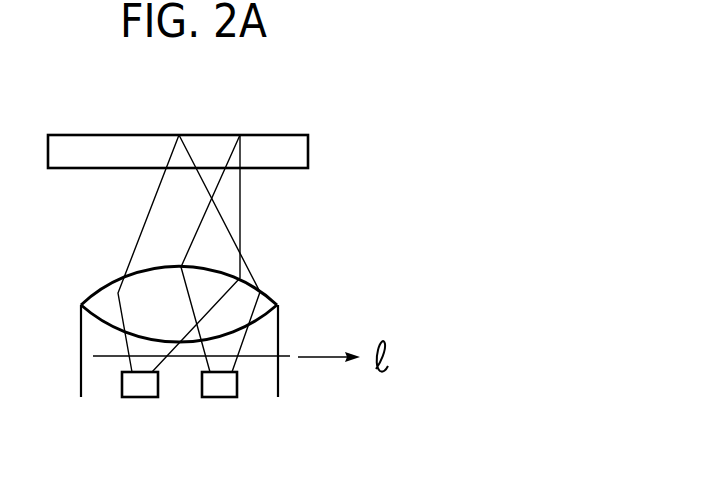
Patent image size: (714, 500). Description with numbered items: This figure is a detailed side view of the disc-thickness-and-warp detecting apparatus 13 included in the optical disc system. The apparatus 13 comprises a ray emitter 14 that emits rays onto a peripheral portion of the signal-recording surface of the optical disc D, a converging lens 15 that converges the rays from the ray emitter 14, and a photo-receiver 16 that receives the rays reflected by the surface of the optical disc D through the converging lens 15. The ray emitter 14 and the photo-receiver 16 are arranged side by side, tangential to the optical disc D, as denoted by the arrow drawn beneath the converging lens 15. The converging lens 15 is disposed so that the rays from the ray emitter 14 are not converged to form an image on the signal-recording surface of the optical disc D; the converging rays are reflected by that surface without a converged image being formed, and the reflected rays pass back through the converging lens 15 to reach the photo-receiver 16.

The optical disc D is at (279, 148).
The disc-thickness-and-warp detecting apparatus 13 is at (358, 288).
The ray emitter 14 is at (133, 383).
The converging lens 15 is at (267, 293).
The photo-receiver 16 is at (227, 384).